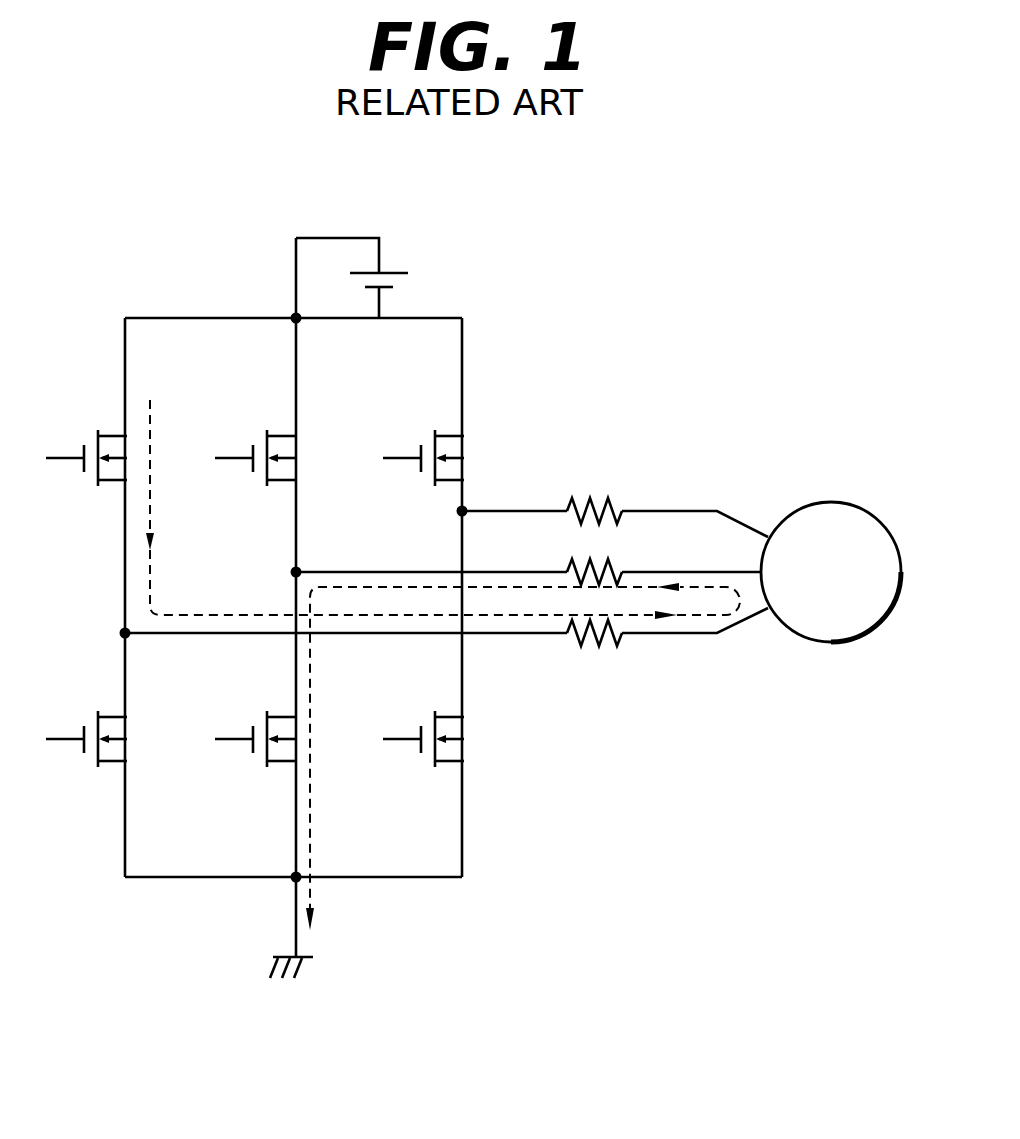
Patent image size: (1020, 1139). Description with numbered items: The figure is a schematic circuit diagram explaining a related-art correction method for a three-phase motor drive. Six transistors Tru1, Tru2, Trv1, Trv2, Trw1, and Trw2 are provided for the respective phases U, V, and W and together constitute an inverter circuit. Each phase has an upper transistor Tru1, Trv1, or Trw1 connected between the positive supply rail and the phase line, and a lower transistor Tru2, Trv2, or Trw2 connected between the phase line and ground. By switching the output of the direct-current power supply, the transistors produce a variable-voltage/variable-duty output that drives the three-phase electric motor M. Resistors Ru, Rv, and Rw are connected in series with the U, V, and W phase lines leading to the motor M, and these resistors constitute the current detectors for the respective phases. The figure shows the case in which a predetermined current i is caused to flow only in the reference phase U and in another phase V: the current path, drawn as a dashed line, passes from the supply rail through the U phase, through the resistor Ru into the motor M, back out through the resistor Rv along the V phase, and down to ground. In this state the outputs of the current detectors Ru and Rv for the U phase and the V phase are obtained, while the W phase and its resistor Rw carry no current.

The transistor Tru1 is at (86, 435).
The transistor Trv1 is at (255, 435).
The transistor Trw1 is at (423, 435).
The transistor Tru2 is at (86, 716).
The transistor Trv2 is at (255, 716).
The transistor Trw2 is at (423, 716).
The resistor Rw is at (615, 497).
The resistor Rv is at (528, 556).
The resistor Ru is at (446, 650).
The three-phase electric motor M is at (831, 572).
The U phase U is at (147, 355).
The V phase V is at (316, 355).
The W phase W is at (490, 355).
The predetermined current i is at (443, 665).